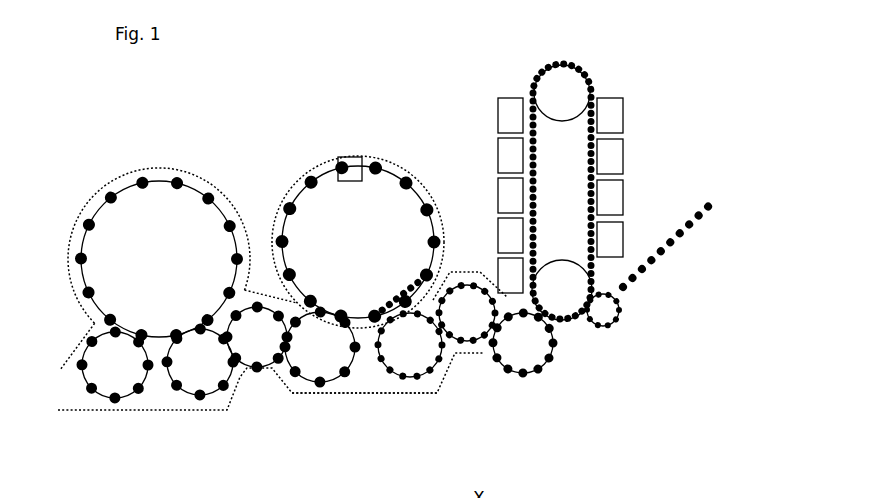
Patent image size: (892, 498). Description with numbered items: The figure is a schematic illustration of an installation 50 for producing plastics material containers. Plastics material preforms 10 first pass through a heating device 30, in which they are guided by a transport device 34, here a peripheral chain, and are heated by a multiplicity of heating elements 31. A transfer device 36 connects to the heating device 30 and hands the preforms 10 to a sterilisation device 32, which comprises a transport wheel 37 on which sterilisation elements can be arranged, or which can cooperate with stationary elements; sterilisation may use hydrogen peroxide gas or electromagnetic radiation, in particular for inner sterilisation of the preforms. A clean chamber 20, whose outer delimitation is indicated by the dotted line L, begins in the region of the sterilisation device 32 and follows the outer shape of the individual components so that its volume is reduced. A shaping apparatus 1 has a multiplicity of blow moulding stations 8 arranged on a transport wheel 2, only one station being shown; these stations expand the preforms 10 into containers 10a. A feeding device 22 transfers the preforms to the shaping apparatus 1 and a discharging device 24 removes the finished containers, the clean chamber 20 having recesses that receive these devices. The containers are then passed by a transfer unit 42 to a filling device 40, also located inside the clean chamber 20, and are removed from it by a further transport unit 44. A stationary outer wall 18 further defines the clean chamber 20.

The shaping apparatus 1 is at (345, 132).
The transport wheel 2 is at (402, 224).
The blow moulding station 8 is at (360, 165).
The plastics material preform 10 is at (633, 278).
The container 10a is at (345, 373).
The wall 18 is at (407, 168).
The clean chamber 20 is at (300, 158).
The feeding device 22 is at (427, 357).
The discharging device 24 is at (315, 373).
The heating device 30 is at (523, 67).
The heating elements 31 is at (512, 117).
The sterilisation device 32 is at (465, 252).
The transport device 34 is at (565, 88).
The transfer device 36 is at (517, 353).
The transport wheel 37 is at (465, 330).
The filling device 40 is at (133, 205).
The transfer unit 42 is at (220, 363).
The transport unit 44 is at (102, 373).
The installation 50 is at (287, 68).
The dotted line L is at (363, 392).